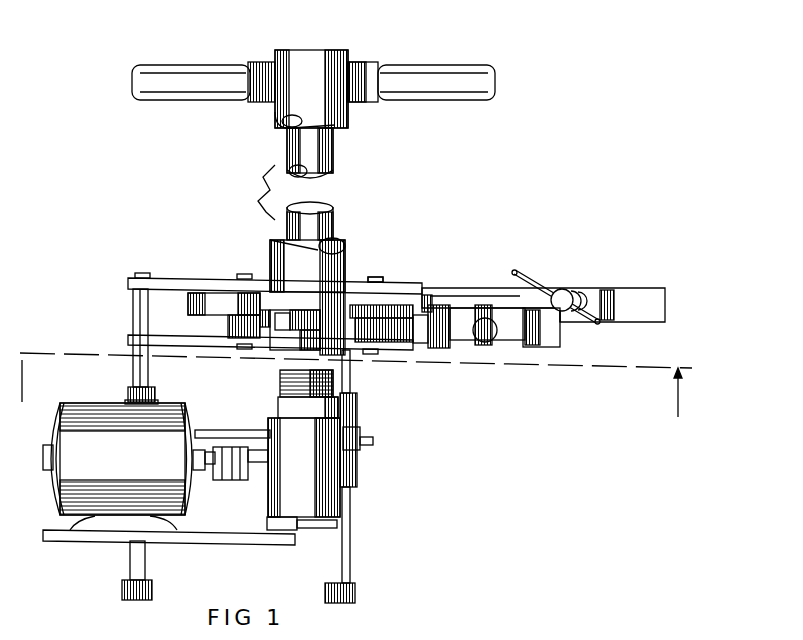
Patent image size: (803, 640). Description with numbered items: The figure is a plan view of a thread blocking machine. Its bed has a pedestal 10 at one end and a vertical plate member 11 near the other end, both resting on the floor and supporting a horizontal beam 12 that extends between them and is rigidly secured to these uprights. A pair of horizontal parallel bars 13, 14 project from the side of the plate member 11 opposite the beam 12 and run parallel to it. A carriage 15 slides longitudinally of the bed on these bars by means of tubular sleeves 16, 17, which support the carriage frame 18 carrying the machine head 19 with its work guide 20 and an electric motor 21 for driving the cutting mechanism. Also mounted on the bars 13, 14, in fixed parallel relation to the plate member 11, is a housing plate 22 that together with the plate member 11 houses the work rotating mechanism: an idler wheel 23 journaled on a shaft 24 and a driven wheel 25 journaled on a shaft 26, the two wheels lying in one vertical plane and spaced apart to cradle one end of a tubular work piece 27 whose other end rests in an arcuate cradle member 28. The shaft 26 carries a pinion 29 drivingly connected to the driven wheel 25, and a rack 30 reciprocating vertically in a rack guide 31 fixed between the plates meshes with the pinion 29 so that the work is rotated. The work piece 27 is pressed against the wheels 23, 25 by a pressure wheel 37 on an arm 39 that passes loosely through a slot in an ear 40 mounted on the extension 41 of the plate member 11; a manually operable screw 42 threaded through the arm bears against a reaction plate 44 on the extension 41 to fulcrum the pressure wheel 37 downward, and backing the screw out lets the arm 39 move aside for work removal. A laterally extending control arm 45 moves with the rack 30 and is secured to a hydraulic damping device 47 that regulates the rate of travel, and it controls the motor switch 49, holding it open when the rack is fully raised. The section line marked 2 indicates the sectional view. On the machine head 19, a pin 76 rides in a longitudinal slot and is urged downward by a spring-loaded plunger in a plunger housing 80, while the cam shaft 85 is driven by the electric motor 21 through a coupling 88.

The section line 2- 2 is at (353, 398).
The pedestal 10 is at (430, 83).
The vertical plate member 11 is at (140, 283).
The horizontal beam 12 is at (333, 150).
The horizontal parallel bar 13 is at (138, 560).
The horizontal parallel bar 14 is at (343, 568).
The carriage 15 is at (212, 432).
The tubular sleeve 16 is at (140, 395).
The tubular sleeve 17 is at (357, 477).
The carriage frame 18 is at (218, 540).
The machine head 19 is at (312, 493).
The work guide 20 is at (285, 410).
The electric motor 21 is at (77, 468).
The housing plate 22 is at (138, 341).
The idler wheel 23 is at (215, 300).
The shaft 24 is at (247, 276).
The driven wheel 25 is at (400, 303).
The shaft 26 is at (375, 280).
The tubular work piece 27 is at (320, 58).
The arcuate cradle member 28 is at (268, 72).
The pinion 29 is at (390, 338).
The rack 30 is at (428, 340).
The rack guide 31 is at (440, 343).
The pressure wheel 37 is at (305, 340).
The arm 39 is at (455, 297).
The ear 40 is at (428, 297).
The extension 41 is at (500, 292).
The manually operable screw 42 is at (560, 298).
The reaction plate 44 is at (635, 300).
The control arm 45 is at (515, 330).
The hydraulic damping device 47 is at (495, 345).
The motor switch 49 is at (563, 338).
The pin 76 is at (375, 440).
The plunger housing 80 is at (358, 445).
The shaft 85 is at (260, 464).
The coupling 88 is at (228, 478).